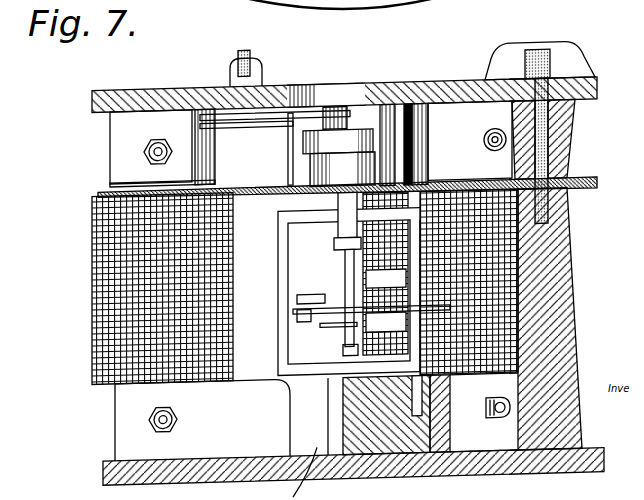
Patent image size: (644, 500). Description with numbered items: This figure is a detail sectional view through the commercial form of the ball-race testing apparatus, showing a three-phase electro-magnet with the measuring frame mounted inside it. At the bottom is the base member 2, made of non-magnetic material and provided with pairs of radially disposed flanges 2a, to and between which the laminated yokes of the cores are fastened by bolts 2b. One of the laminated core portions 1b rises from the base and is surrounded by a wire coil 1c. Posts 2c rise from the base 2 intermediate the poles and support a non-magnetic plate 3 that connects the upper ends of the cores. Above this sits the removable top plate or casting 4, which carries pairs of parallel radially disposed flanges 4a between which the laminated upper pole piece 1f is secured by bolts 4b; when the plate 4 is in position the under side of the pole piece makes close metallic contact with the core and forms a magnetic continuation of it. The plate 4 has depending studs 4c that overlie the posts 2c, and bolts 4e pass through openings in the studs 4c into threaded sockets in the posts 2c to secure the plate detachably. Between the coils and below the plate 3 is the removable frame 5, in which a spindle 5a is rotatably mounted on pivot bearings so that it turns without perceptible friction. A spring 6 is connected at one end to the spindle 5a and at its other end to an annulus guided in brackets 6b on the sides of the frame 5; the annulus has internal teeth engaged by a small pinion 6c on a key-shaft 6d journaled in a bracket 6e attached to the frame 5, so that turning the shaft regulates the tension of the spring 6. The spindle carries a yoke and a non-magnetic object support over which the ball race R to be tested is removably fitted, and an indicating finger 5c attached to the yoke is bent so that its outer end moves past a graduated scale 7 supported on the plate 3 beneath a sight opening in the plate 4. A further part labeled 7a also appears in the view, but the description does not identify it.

The top plate 4 is at (131, 93).
The bolts 4e is at (262, 79).
The depending studs 4c is at (567, 147).
The flanges 4a is at (311, 145).
The bolts 4b is at (483, 160).
The ball race R is at (349, 146).
The upper magnetic pole piece 1f is at (400, 111).
The graduated scale 7 is at (288, 156).
The indicating finger 5c is at (328, 174).
The plate 3 is at (100, 195).
The wire coils 1c is at (596, 257).
The bracket 6e is at (408, 304).
The frame 5 is at (278, 266).
The spindle 5a is at (290, 360).
The key-shaft 6d is at (342, 296).
The brackets 6b is at (345, 344).
The spring 6 is at (352, 366).
The pinion 6c is at (362, 302).
The posts 2c is at (575, 339).
The flanges 2a is at (202, 420).
The bolts 2b is at (513, 427).
The base member 2 is at (207, 480).
The core portion 1b is at (388, 456).
The block 7a is at (452, 442).